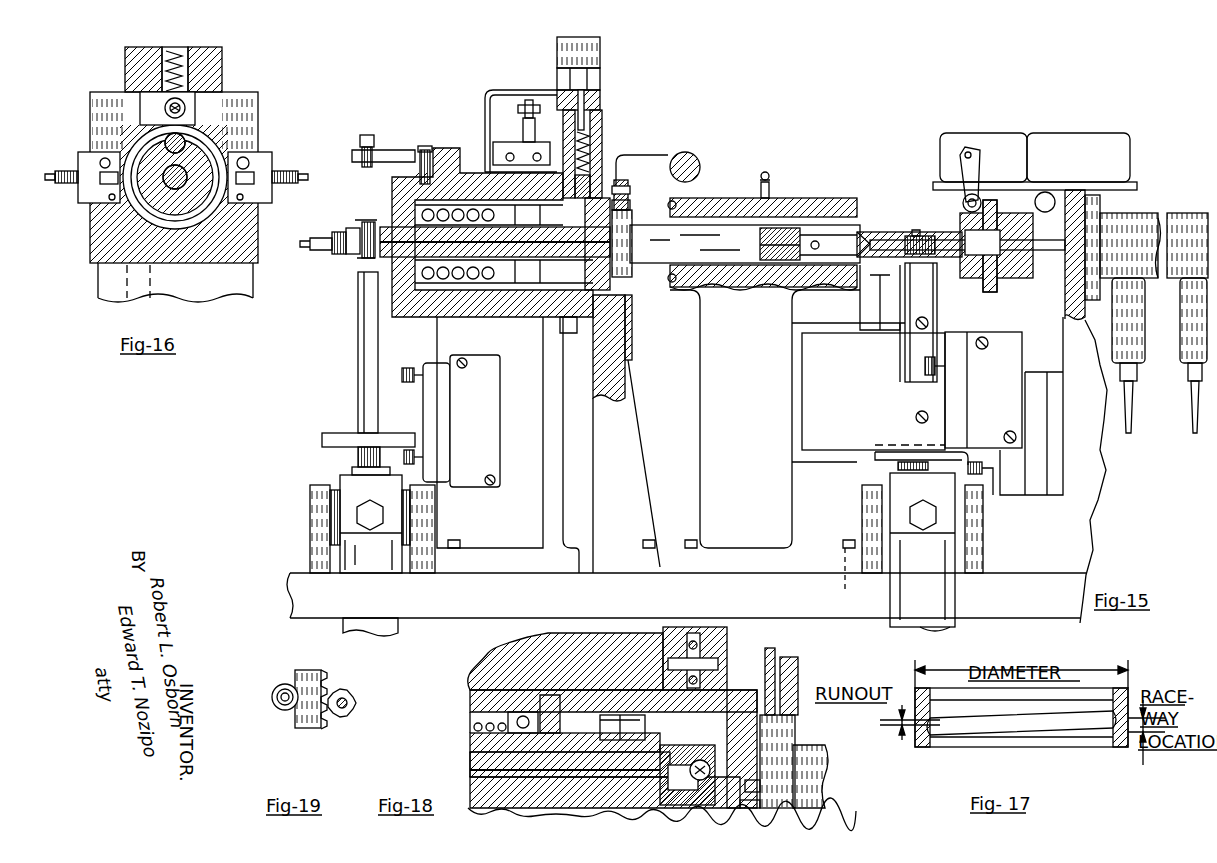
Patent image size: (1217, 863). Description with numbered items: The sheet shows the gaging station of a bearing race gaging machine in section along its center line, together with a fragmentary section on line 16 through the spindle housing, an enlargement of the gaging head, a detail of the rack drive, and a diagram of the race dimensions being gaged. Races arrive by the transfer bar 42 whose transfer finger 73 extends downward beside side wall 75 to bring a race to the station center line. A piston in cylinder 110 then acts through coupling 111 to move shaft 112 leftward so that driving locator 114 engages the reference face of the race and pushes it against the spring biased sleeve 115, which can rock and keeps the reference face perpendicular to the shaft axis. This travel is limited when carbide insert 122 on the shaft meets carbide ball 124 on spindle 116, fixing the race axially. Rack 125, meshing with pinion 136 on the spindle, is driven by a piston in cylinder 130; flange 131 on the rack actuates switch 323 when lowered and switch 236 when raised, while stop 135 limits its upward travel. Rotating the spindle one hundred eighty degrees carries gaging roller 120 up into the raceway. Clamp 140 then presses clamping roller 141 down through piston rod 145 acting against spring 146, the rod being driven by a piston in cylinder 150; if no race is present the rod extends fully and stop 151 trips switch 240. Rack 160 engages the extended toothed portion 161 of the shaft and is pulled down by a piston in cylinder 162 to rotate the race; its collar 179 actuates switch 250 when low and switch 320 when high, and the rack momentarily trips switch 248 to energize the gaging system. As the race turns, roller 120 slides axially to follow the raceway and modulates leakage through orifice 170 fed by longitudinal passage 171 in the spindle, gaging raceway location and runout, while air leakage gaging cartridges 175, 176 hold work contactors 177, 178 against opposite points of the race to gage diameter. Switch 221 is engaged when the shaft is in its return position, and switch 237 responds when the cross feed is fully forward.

In FIG. 15, the section line 16— 16 is at (557, 177).
In FIG. 15, the transfer bar 42 is at (692, 153).
In FIG. 15, the transfer finger 73 is at (620, 165).
In FIG. 18, the transfer finger 73 is at (765, 662).
In FIG. 15, the side wall 75 is at (628, 190).
In FIG. 18, the side wall 75 is at (790, 660).
In FIG. 15, the cylinder 110 is at (1145, 213).
In FIG. 15, the coupling 111 is at (975, 278).
In FIG. 15, the shaft 112 is at (722, 232).
In FIG. 18, the shaft 112 is at (808, 752).
In FIG. 15, the driving locator 114 is at (620, 182).
In FIG. 18, the driving locator 114 is at (740, 698).
In FIG. 15, the spring biased sleeve 115 is at (520, 294).
In FIG. 18, the spring biased sleeve 115 is at (552, 705).
In FIG. 16, the spindle 116 is at (215, 150).
In FIG. 15, the spindle 116 is at (420, 222).
In FIG. 18, the spindle 116 is at (478, 750).
In FIG. 16, the gaging roller 120 is at (185, 140).
In FIG. 15, the gaging roller 120 is at (630, 205).
In FIG. 18, the gaging roller 120 is at (700, 775).
In FIG. 18, the carbide insert 122 is at (760, 787).
In FIG. 18, the carbide ball 124 is at (760, 806).
In FIG. 15, the rack 125 is at (358, 300).
In FIG. 19, the rack 125 is at (322, 676).
In FIG. 15, the cylinder 130 is at (358, 552).
In FIG. 15, the flange 131 is at (335, 433).
In FIG. 15, the stop 135 is at (362, 168).
In FIG. 15, the pinion 136 is at (365, 258).
In FIG. 19, the pinion 136 is at (356, 698).
In FIG. 16, the clamp 140 is at (202, 70).
In FIG. 15, the clamp 140 is at (604, 110).
In FIG. 18, the clamp 140 is at (672, 636).
In FIG. 16, the clamping roller 141 is at (165, 106).
In FIG. 15, the clamping roller 141 is at (598, 165).
In FIG. 18, the clamping roller 141 is at (688, 650).
In FIG. 15, the piston rod 145 is at (603, 100).
In FIG. 16, the spring 146 is at (184, 50).
In FIG. 15, the spring 146 is at (605, 118).
In FIG. 15, the cylinder 150 is at (600, 50).
In FIG. 15, the stop 151 is at (530, 108).
In FIG. 15, the rack 160 is at (910, 236).
In FIG. 15, the extended toothed portion 161 is at (860, 232).
In FIG. 15, the cylinder 162 is at (940, 563).
In FIG. 18, the orifice 170 is at (608, 722).
In FIG. 15, the longitudinal passage 171 is at (350, 232).
In FIG. 18, the longitudinal passage 171 is at (475, 778).
In FIG. 16, the air leakage gaging cartridge 175 is at (92, 182).
In FIG. 16, the air leakage gaging cartridge 176 is at (265, 165).
In FIG. 16, the work contactor 177 is at (110, 160).
In FIG. 16, the work contactor 178 is at (250, 200).
In FIG. 15, the collar 179 is at (888, 457).
In FIG. 15, the switch 221 is at (1072, 148).
In FIG. 15, the switch 236 is at (410, 360).
In FIG. 15, the switch 237 is at (965, 143).
In FIG. 15, the switch 240 is at (512, 142).
In FIG. 15, the switch 248 is at (955, 343).
In FIG. 15, the switch 250 is at (992, 470).
In FIG. 15, the switch 320 is at (900, 300).
In FIG. 15, the switch 323 is at (455, 485).